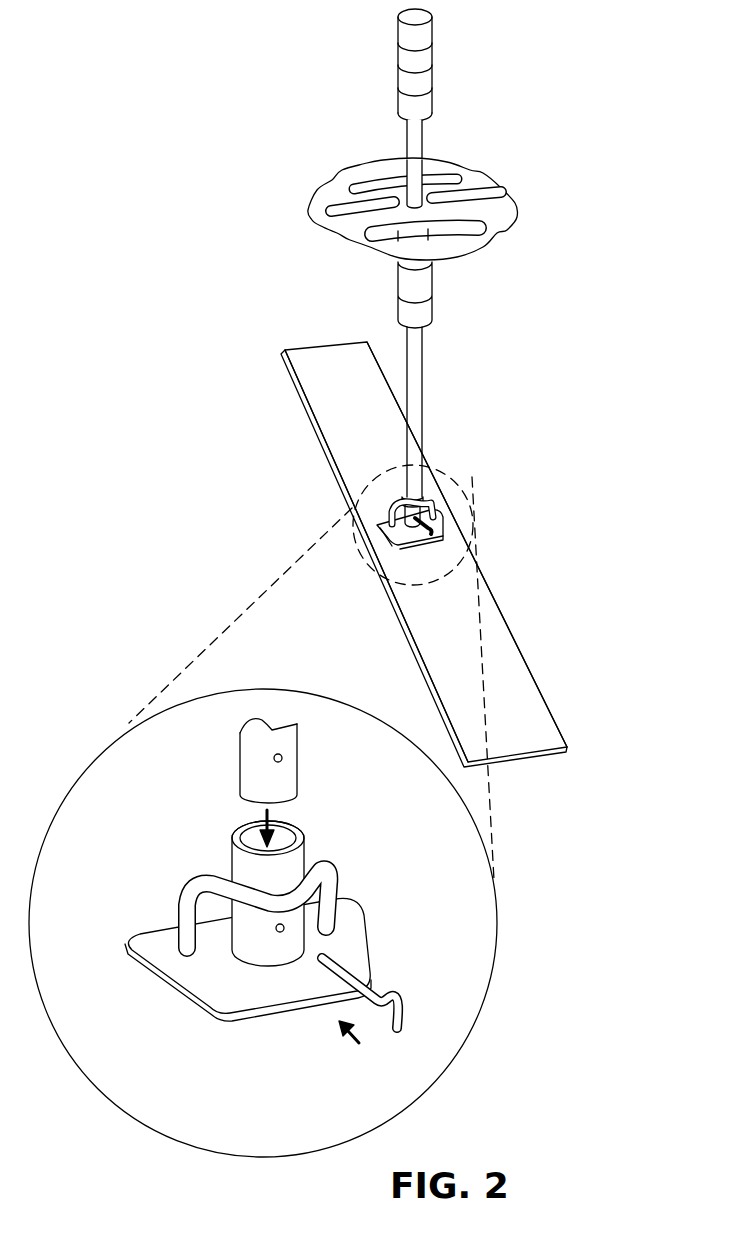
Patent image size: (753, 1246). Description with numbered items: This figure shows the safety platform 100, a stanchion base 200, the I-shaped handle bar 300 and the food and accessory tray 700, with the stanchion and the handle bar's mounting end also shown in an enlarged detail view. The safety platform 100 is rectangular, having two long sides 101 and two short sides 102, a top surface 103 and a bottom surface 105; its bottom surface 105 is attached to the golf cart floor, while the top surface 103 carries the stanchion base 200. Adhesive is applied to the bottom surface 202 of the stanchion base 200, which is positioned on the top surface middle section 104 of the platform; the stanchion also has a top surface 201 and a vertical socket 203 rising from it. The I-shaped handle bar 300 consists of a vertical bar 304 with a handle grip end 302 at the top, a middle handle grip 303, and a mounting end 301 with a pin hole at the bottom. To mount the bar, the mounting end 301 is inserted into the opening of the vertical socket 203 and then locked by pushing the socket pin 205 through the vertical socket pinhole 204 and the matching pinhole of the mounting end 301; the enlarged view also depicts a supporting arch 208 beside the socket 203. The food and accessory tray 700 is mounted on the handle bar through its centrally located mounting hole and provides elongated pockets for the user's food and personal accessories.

The safety platform 100 is at (378, 553).
The long side 101 is at (306, 410).
The short side 102 is at (305, 348).
The top surface 103 is at (500, 655).
The top surface middle section 104 is at (413, 525).
The bottom surface 105 is at (326, 447).
The stanchion base 200 is at (223, 930).
The top surface 201 is at (220, 996).
The bottom surface 202 is at (198, 1012).
The vertical socket 203 is at (301, 858).
The vertical socket pinhole 204 is at (278, 932).
The socket pin 205 is at (391, 993).
The retaining loop 208 is at (186, 888).
The I-shaped handle bar 300 is at (315, 406).
The mounting end, with a pin hole 301 is at (426, 500).
The handle grip end 302 is at (431, 83).
The middle handle grip 303 is at (434, 312).
The vertical bar 304 is at (423, 395).
The food and accessory tray 700 is at (290, 213).